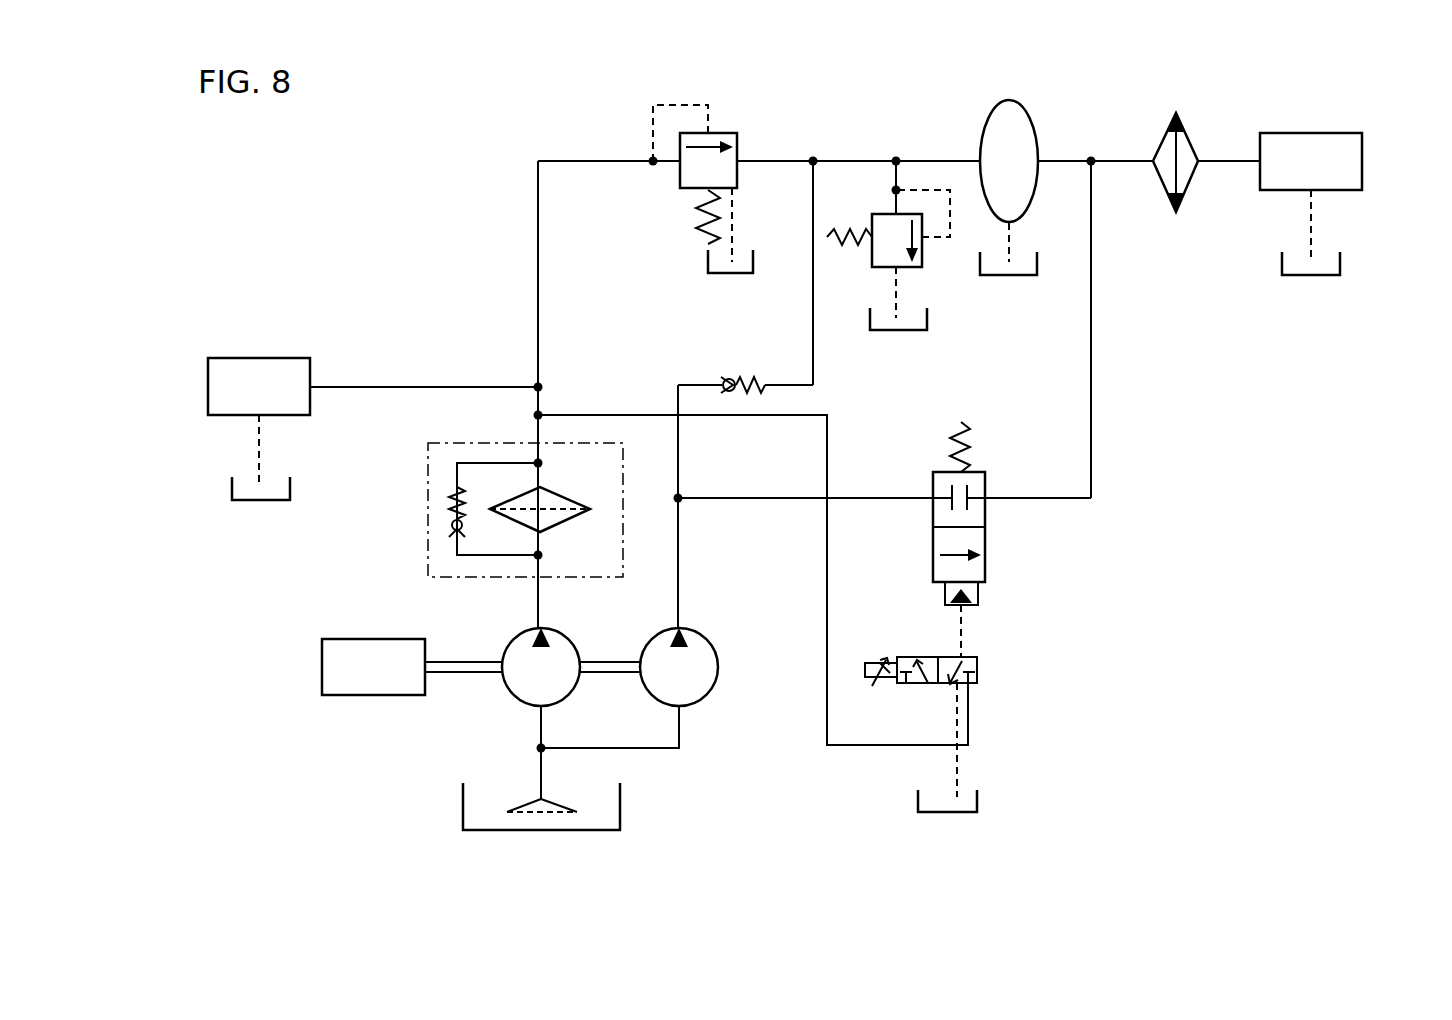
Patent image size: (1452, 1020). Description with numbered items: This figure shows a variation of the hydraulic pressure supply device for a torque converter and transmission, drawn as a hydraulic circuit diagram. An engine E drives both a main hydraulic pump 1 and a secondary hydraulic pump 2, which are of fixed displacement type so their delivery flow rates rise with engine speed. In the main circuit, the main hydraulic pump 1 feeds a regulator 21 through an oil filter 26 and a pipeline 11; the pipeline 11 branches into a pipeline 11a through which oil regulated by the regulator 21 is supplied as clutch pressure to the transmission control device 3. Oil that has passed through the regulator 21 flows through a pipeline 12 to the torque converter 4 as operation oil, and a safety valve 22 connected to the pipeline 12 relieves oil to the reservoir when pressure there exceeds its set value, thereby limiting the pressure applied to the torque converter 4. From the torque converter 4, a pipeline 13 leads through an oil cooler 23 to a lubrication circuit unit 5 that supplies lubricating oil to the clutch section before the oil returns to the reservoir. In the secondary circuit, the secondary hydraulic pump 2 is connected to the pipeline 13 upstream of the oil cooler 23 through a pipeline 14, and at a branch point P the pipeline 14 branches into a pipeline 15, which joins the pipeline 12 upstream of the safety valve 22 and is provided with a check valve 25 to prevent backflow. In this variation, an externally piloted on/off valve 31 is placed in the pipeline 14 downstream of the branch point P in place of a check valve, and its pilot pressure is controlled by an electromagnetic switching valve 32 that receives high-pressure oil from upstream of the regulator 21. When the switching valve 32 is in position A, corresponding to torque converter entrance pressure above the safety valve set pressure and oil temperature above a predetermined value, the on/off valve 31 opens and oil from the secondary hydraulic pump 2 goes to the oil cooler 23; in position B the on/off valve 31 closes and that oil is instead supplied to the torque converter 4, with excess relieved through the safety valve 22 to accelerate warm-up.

The main hydraulic pump 1 is at (512, 697).
The secondary hydraulic pump 2 is at (704, 697).
The transmission control device 3 is at (208, 387).
The torque converter 4 is at (1030, 118).
The lubrication circuit unit 5 is at (1362, 161).
The pipeline 11 is at (538, 258).
The pipeline 11a is at (420, 387).
The pipeline 12 is at (860, 161).
The pipeline 13 is at (1125, 160).
The pipeline 14 is at (680, 530).
The pipeline 15 is at (813, 293).
The regulator 21 is at (721, 133).
The safety valve 22 is at (870, 262).
The oil cooler 23 is at (1185, 127).
The check valve 25 is at (727, 378).
The oil filter 26 is at (414, 500).
The on/off valve 31 is at (985, 485).
The electromagnetic switching valve 32 is at (977, 678).
The engine E is at (322, 668).
The branch point P is at (680, 496).
The position A is at (915, 642).
The position B is at (975, 642).